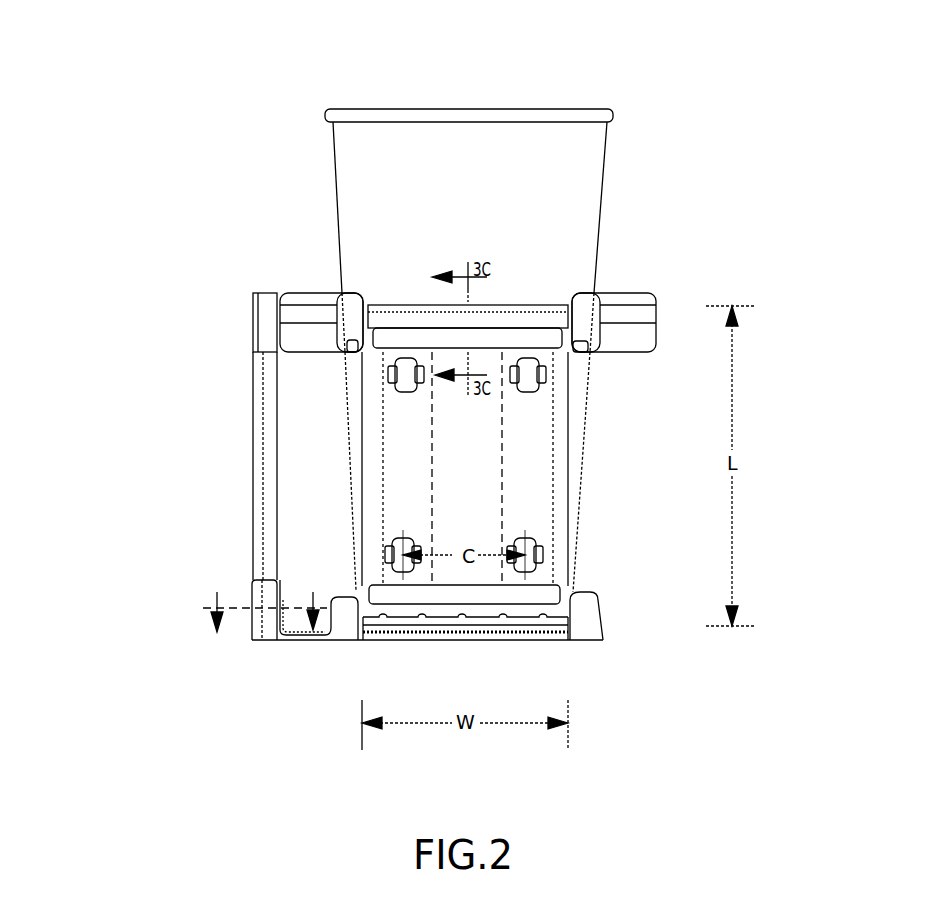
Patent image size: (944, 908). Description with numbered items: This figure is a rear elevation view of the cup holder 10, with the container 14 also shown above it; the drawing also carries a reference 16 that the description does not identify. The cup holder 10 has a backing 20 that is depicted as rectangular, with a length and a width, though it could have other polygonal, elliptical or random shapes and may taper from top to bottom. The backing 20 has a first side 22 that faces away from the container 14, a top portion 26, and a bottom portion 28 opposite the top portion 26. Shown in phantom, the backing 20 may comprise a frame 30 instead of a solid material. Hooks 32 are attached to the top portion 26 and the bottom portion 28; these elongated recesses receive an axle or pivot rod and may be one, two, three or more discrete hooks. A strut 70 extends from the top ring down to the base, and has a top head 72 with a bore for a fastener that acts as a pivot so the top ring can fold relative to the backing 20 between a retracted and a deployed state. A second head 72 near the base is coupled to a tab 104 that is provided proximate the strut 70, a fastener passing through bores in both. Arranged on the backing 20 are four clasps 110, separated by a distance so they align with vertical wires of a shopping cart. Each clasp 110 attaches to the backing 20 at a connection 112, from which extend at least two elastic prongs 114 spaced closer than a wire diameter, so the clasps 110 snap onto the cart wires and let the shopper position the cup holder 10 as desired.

The cup holder 10 is at (710, 202).
The container 14 is at (613, 113).
The holder assembly 16 is at (215, 188).
The backing 20 is at (560, 505).
The first side 22 is at (553, 467).
The top portion 26 is at (593, 292).
The bottom portion 28 is at (576, 596).
The frame 30 is at (390, 492).
The hooks 32 is at (580, 354).
The strut 70 is at (252, 484).
The head 72 is at (268, 292).
The tab 104 is at (286, 633).
The clasps 110 is at (530, 628).
The connection 112 is at (398, 392).
The elastic prongs 114 is at (403, 358).